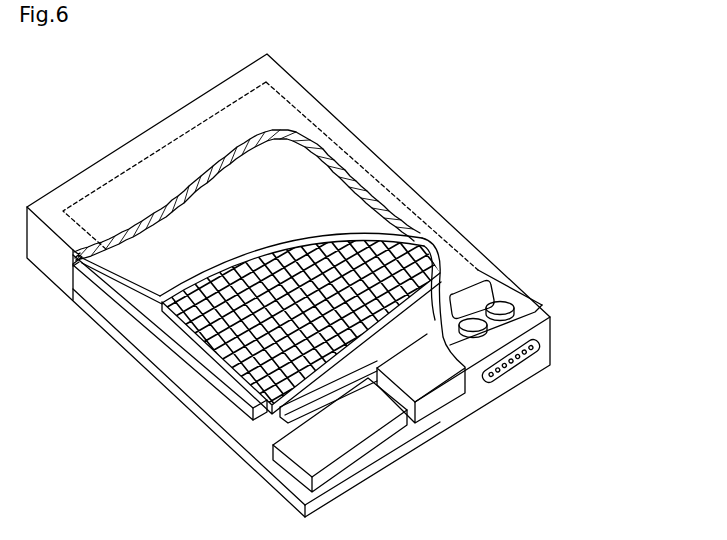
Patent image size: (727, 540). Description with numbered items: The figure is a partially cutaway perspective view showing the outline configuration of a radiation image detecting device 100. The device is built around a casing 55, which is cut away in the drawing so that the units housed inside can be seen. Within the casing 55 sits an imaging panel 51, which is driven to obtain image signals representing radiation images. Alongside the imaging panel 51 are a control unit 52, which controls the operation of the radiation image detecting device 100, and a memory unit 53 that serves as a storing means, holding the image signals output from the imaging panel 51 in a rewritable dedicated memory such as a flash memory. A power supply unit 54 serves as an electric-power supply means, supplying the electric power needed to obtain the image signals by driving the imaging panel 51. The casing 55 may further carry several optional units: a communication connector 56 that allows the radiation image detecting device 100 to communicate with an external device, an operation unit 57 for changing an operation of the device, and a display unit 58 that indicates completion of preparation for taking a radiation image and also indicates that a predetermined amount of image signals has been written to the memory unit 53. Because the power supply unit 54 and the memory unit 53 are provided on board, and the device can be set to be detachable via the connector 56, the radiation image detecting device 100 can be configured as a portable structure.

The radiation image detecting device 100 is at (397, 123).
The imaging panel 51 is at (130, 272).
The control unit 52 is at (440, 417).
The memory unit 53 is at (372, 457).
The power supply unit 54 is at (187, 373).
The casing 55 is at (318, 101).
The communication connector 56 is at (512, 378).
The operation unit 57 is at (519, 315).
The display unit 58 is at (483, 287).